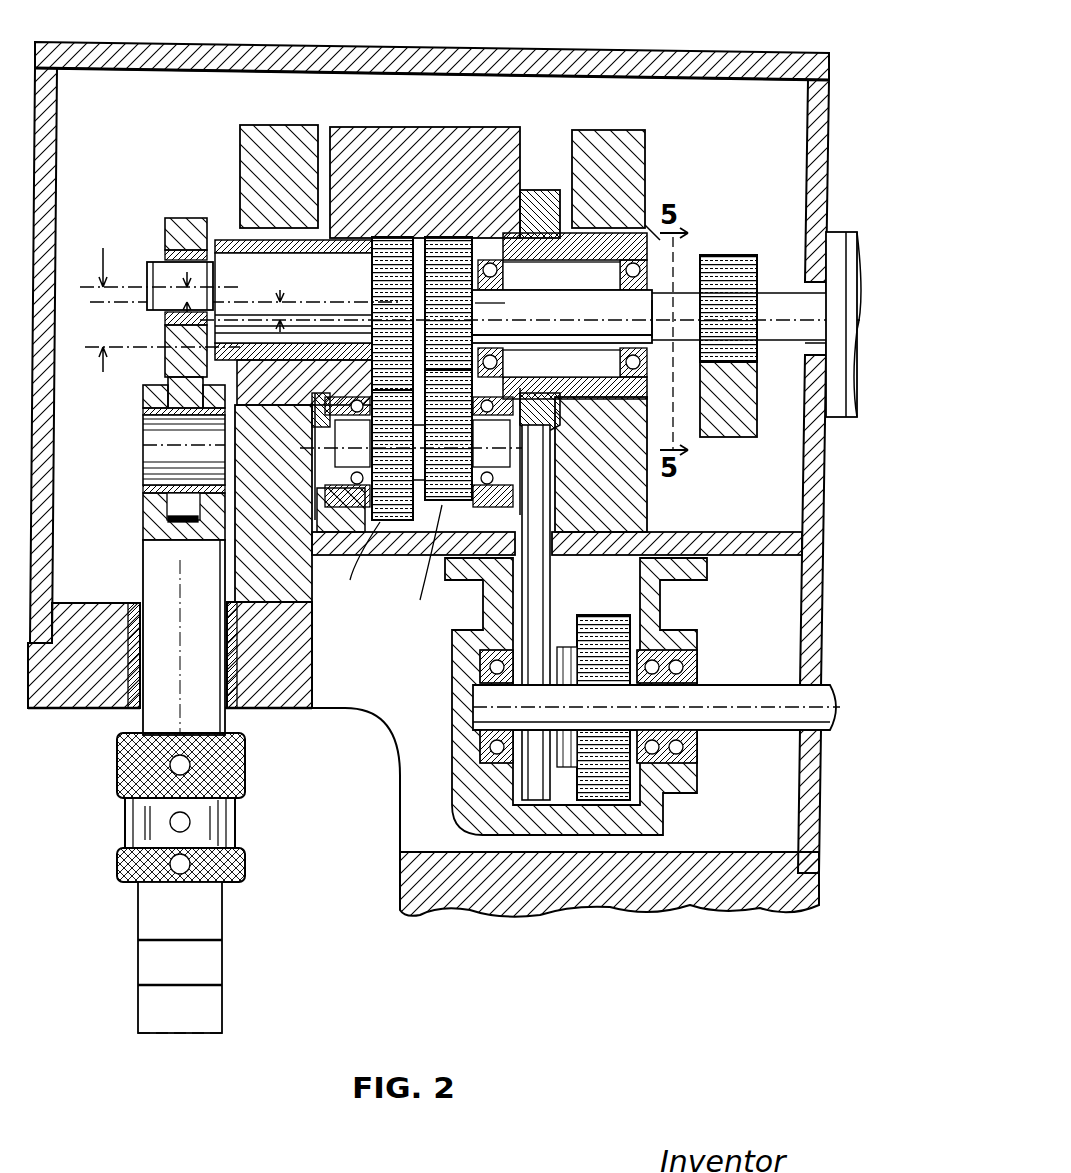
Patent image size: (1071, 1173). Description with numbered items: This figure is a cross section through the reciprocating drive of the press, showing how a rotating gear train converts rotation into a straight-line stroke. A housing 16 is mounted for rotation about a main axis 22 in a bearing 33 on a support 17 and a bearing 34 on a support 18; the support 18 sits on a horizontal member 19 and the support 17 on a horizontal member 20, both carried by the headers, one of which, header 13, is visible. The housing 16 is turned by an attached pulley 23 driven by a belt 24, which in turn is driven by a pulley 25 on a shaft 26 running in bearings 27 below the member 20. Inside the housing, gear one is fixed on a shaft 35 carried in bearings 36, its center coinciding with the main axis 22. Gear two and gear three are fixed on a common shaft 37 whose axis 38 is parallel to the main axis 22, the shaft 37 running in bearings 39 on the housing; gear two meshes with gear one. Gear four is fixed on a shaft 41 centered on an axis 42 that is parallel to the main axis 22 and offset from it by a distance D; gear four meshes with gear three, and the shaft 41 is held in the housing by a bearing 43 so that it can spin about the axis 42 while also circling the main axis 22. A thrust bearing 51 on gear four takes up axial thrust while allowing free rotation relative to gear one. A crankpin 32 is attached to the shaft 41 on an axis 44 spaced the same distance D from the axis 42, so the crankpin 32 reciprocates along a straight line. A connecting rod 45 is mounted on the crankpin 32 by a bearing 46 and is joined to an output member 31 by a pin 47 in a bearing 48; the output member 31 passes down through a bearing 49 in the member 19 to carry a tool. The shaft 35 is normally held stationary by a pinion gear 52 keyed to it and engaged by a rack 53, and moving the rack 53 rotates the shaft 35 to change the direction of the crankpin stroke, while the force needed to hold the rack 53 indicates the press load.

The header 13 is at (815, 605).
The housing 16 is at (478, 22).
The support 17 is at (640, 142).
The support 18 is at (275, 130).
The horizontal member 19 is at (268, 710).
The horizontal member 20 is at (745, 545).
The main axis 22 is at (303, 323).
The pulley 23 is at (532, 192).
The belt 24 is at (550, 484).
The pulley 25 is at (560, 645).
The shaft 26 is at (478, 706).
The bearings 27 is at (490, 765).
The output member 31 is at (150, 916).
The crankpin 32 is at (150, 262).
The bearing 33 is at (648, 226).
The bearing 34 is at (246, 240).
The shaft 35 is at (800, 345).
The bearings 36 is at (500, 260).
The shaft 37 is at (318, 408).
The axis 38 is at (325, 440).
The bearings 39 is at (357, 520).
The shaft 41 is at (342, 270).
The axis 42 is at (322, 290).
The bearing 43 is at (348, 290).
The axis 44 is at (100, 287).
The connecting rod 45 is at (184, 225).
The bearing 46 is at (158, 327).
The pin 47 is at (150, 447).
The bearing 48 is at (145, 408).
The bearing 49 is at (118, 712).
The thrust bearing 51 is at (441, 275).
The pinion gear 52 is at (736, 268).
The rack 53 is at (740, 438).